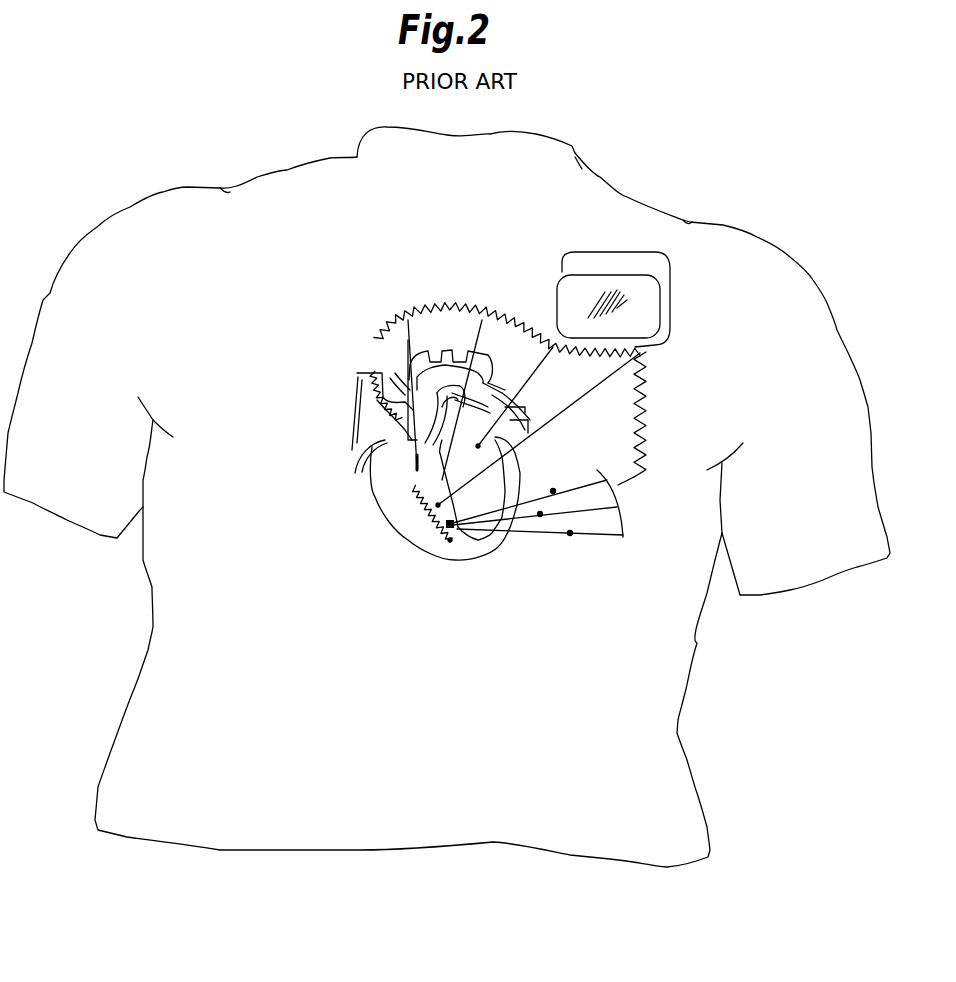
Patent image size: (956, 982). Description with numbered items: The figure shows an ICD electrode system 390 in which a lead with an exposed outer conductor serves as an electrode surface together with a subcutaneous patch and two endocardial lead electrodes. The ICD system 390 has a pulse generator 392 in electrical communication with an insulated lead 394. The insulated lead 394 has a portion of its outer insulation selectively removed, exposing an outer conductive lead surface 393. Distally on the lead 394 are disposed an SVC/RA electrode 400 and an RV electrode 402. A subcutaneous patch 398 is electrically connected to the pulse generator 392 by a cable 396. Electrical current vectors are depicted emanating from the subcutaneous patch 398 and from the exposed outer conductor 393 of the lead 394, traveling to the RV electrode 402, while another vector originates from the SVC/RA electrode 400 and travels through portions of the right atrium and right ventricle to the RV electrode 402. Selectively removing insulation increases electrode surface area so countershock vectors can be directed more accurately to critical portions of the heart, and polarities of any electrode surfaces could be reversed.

The ICD system 390 is at (745, 363).
The pulse generator 392 is at (647, 318).
The outer conductive lead surface 393 is at (467, 305).
The insulated lead 394 is at (672, 297).
The cable 396 is at (640, 428).
The subcutaneous patch 398 is at (623, 510).
The SVC/RA electrode 400 is at (353, 418).
The RV electrode 402 is at (423, 530).